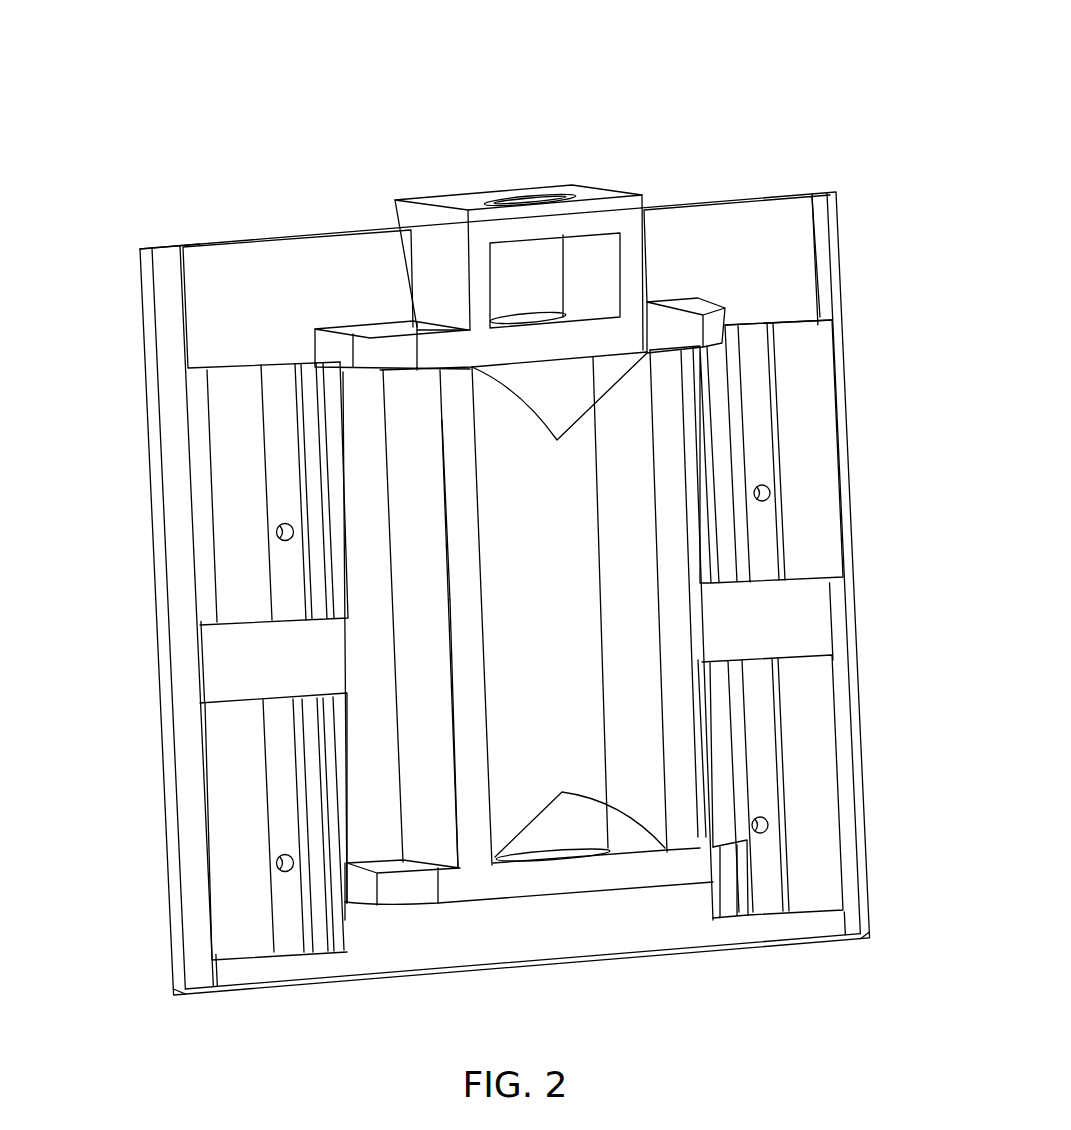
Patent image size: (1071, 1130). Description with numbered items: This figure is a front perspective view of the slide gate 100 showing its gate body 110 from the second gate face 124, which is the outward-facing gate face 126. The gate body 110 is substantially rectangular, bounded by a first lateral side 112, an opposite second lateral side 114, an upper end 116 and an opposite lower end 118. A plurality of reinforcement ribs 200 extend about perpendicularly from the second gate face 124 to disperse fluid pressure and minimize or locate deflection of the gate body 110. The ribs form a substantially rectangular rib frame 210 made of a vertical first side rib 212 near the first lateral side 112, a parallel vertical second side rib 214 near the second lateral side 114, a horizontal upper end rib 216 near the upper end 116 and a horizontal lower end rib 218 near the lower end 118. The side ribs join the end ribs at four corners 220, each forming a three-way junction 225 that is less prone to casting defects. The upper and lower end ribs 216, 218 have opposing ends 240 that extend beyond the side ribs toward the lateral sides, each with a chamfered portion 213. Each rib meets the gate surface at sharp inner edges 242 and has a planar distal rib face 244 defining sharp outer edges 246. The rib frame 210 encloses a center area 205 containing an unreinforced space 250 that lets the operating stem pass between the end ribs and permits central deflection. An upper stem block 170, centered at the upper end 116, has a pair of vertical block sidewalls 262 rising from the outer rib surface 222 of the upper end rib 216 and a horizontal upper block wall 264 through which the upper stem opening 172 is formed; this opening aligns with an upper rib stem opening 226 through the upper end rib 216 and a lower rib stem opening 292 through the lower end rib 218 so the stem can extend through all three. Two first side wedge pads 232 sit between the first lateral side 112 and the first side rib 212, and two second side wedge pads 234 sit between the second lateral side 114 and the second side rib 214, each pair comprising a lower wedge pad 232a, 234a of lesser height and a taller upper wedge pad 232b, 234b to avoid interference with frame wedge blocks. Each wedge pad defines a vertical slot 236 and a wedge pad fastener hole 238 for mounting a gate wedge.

The slide gate 100 is at (487, 526).
The gate body 110 is at (272, 256).
The first lateral side 112 is at (842, 235).
The second lateral side 114 is at (150, 312).
The upper end 116 is at (220, 242).
The lower end 118 is at (273, 987).
The second gate face 124 is at (738, 236).
The outward-facing gate face 126 is at (768, 215).
The upper stem block 170 is at (509, 233).
The upper stem opening 172 is at (520, 190).
The reinforcement ribs 200 is at (504, 622).
The center area 205 is at (744, 652).
The rib frame 210 is at (647, 467).
The first side rib 212 is at (791, 633).
The chamfered portion 213 is at (375, 345).
The second side rib 214 is at (423, 702).
The upper end rib 216 is at (667, 332).
The lower end rib 218 is at (532, 883).
The corners 220 is at (557, 440).
The outer rib surface 222 is at (403, 327).
The three-way junction 225 is at (477, 868).
The upper rib stem opening 226 is at (547, 307).
The first side wedge pads 232 is at (831, 617).
The lower wedge pad 232a is at (807, 793).
The upper wedge pad 232b is at (818, 360).
The second side wedge pads 234 is at (194, 661).
The lower wedge pad 234a is at (232, 878).
The upper wedge pad 234b is at (194, 493).
The vertical slot 236 is at (285, 508).
The wedge pad fastener hole 238 is at (275, 548).
The opposing ends 240 is at (517, 302).
The inner edges 242 is at (397, 640).
The distal rib face 244 is at (468, 680).
The outer edges 246 is at (457, 742).
The unreinforced space 250 is at (560, 578).
The block sidewalls 262 is at (423, 248).
The upper block wall 264 is at (470, 197).
The lower rib stem opening 292 is at (608, 855).